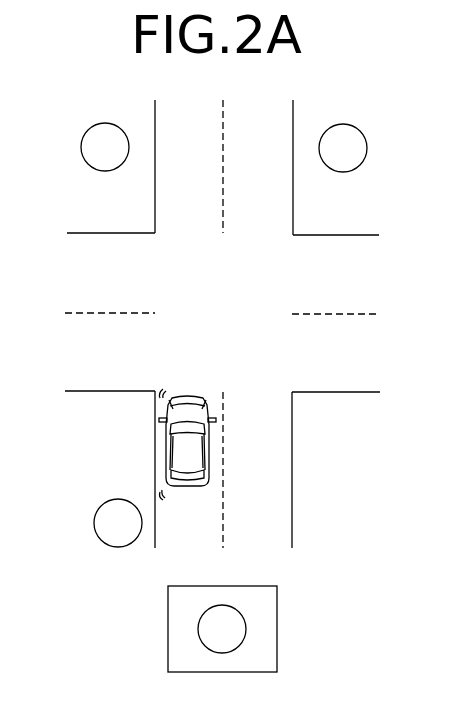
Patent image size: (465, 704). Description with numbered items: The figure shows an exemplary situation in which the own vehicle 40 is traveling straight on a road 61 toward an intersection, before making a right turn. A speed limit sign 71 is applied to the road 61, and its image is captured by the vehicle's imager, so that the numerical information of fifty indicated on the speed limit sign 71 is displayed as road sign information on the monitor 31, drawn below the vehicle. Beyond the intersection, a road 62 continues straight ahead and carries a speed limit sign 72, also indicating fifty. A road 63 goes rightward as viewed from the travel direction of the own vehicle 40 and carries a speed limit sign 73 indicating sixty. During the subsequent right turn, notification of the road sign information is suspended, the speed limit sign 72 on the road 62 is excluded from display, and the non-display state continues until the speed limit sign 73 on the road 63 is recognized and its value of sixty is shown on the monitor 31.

The monitor 31 is at (278, 628).
The own vehicle 40 is at (166, 470).
The road 61 is at (292, 513).
The road 62 is at (155, 207).
The road 63 is at (374, 235).
The speed limit sign 71 is at (101, 542).
The speed limit sign 72 is at (81, 147).
The speed limit sign 73 is at (367, 148).